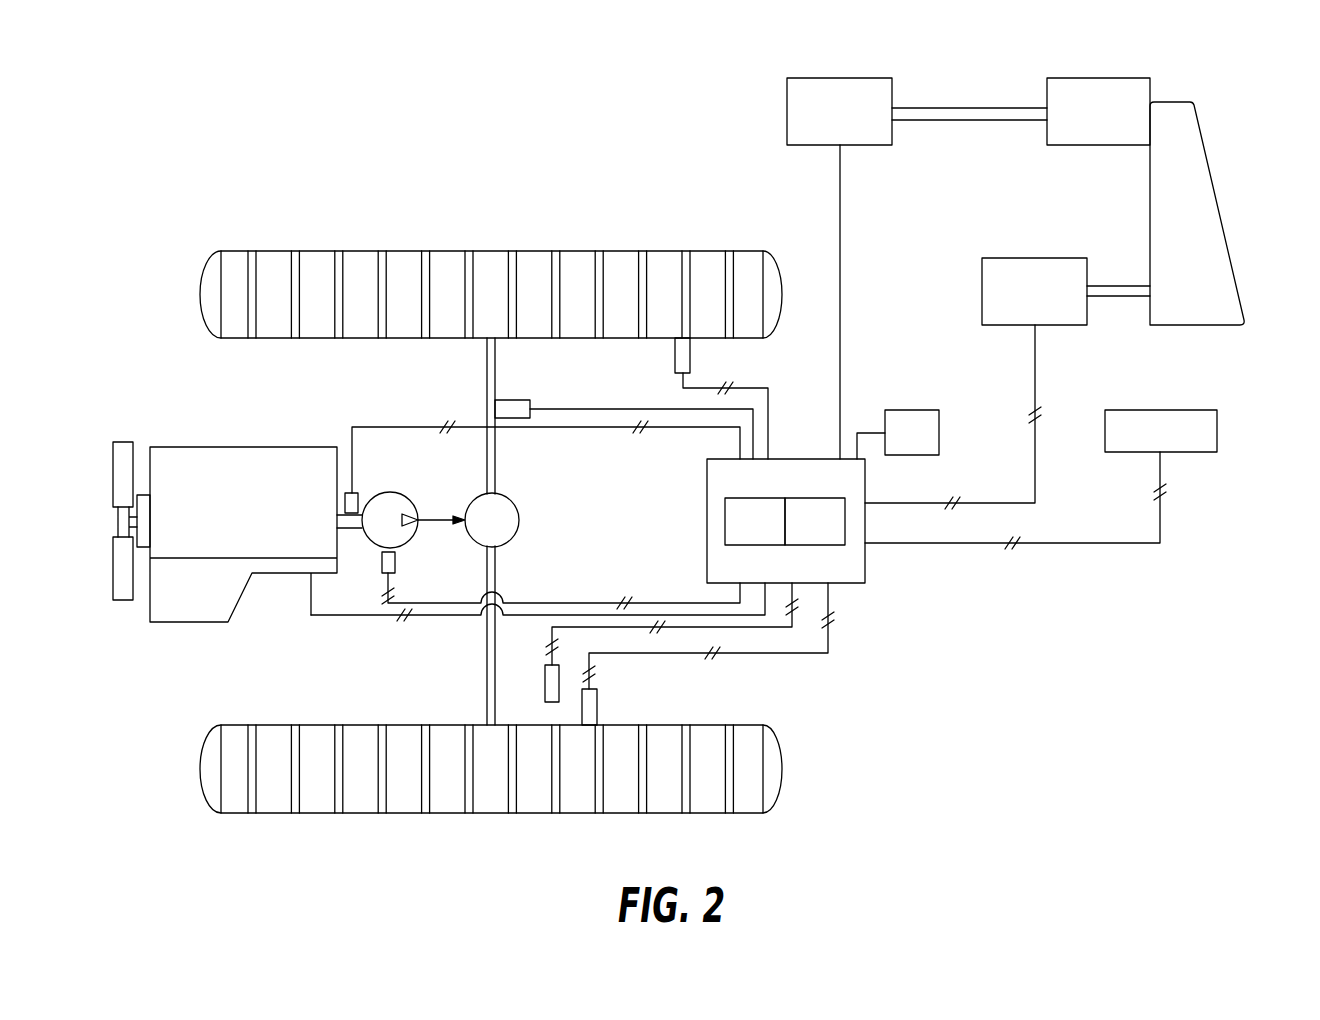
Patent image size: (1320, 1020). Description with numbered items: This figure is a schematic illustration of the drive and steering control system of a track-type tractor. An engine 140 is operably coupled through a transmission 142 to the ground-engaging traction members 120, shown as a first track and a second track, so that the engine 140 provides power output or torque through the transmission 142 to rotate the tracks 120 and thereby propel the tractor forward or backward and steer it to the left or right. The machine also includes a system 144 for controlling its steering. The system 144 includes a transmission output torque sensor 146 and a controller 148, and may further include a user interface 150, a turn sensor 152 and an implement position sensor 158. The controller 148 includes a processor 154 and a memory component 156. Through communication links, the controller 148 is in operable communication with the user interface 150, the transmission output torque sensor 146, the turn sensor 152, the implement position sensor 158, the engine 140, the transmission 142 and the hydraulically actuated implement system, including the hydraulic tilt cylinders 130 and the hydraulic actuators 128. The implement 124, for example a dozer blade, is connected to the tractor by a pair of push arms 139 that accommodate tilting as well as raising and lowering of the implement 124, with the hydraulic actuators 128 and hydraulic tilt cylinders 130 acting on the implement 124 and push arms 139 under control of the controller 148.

The ground-engaging traction members 120 is at (408, 247).
The implement 124 is at (1222, 212).
The hydraulic actuators 128 is at (823, 123).
The hydraulic tilt cylinders 130 is at (1019, 303).
The push arms 139 is at (1082, 123).
The engine 140 is at (226, 522).
The transmission 142 is at (390, 492).
The system 144 is at (856, 417).
The transmission output torque sensor 146 is at (410, 515).
The controller 148 is at (786, 485).
The user interface 150 is at (1145, 442).
The turn sensor 152 is at (545, 686).
The processor 154 is at (739, 533).
The memory component 156 is at (799, 533).
The implement position sensor 158 is at (896, 445).